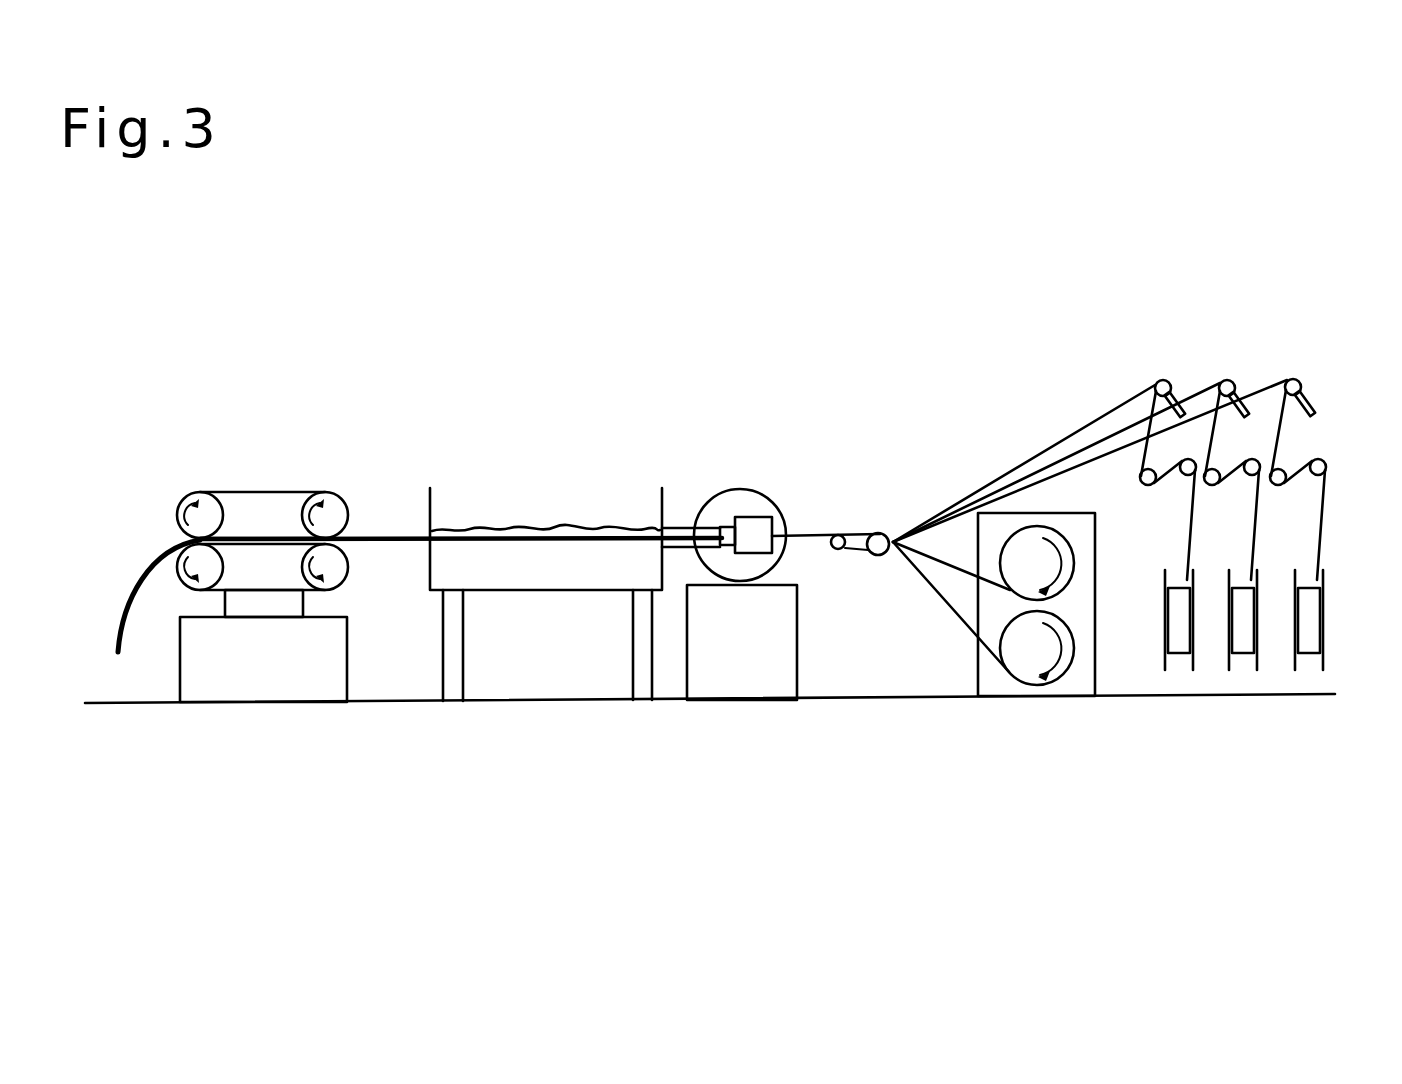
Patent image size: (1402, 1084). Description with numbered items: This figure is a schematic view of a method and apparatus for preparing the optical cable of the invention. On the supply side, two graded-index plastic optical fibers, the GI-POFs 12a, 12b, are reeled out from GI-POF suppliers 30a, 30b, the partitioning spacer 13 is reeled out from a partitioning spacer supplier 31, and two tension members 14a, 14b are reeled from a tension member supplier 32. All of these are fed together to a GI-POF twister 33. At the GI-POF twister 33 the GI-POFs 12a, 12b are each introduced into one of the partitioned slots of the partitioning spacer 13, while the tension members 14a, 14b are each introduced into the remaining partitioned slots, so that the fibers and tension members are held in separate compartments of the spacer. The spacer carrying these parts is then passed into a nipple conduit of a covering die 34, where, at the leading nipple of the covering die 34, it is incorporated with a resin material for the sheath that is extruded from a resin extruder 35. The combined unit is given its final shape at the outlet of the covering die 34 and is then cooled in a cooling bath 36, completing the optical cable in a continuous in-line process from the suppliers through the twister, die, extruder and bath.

The GI-POF 12a is at (1120, 406).
The GI-POF 12b is at (1113, 436).
The partitioning spacer 13 is at (1292, 432).
The tension member 14a is at (916, 578).
The tension member 14b is at (948, 603).
The GI-POF supplier 30a is at (1160, 380).
The GI-POF supplier 30b is at (1226, 380).
The partitioning spacer supplier 31 is at (1296, 379).
The tension member supplier 32 is at (1065, 722).
The GI-POF twister 33 is at (884, 532).
The covering die 34 is at (766, 517).
The resin extruder 35 is at (736, 488).
The cooling bath 36 is at (559, 503).